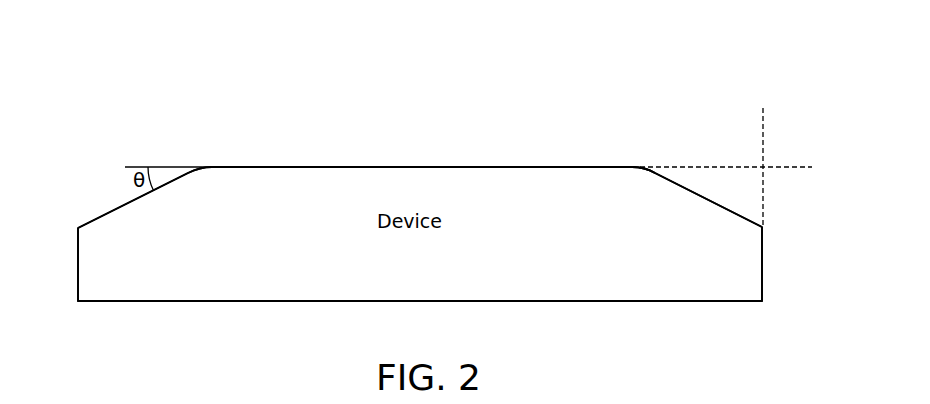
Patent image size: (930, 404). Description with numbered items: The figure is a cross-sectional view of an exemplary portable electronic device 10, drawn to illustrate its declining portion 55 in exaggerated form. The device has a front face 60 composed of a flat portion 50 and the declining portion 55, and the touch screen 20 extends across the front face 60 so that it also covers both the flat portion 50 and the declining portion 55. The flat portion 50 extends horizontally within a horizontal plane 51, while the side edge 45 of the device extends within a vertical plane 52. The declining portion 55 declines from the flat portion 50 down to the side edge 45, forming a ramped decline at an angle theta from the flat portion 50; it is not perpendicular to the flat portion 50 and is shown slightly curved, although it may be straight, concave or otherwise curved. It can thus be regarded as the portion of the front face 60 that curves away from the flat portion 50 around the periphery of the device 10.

The portable electronic device 10 is at (120, 157).
The touch screen 20 is at (277, 166).
The side edge 45 is at (78, 276).
The flat portion 50 is at (588, 158).
The horizontal plane 51 is at (795, 169).
The vertical plane 52 is at (765, 133).
The declining portion 55 is at (102, 189).
The front face 60 is at (732, 142).